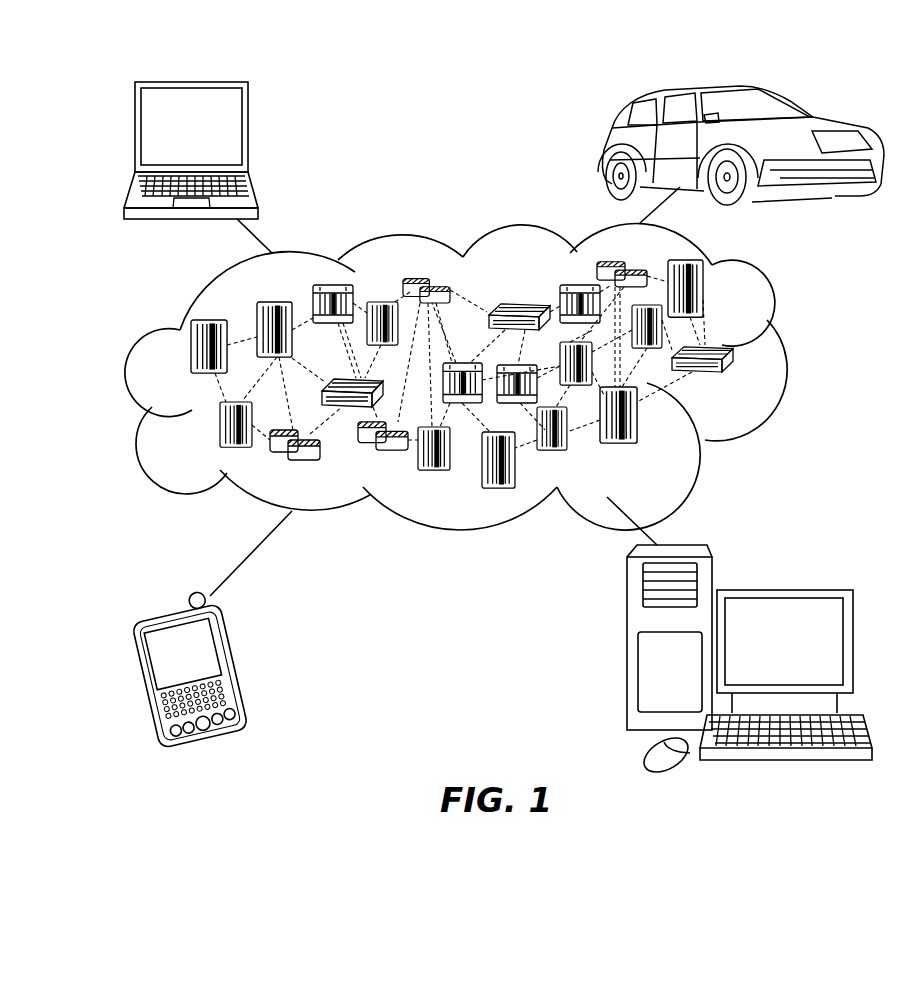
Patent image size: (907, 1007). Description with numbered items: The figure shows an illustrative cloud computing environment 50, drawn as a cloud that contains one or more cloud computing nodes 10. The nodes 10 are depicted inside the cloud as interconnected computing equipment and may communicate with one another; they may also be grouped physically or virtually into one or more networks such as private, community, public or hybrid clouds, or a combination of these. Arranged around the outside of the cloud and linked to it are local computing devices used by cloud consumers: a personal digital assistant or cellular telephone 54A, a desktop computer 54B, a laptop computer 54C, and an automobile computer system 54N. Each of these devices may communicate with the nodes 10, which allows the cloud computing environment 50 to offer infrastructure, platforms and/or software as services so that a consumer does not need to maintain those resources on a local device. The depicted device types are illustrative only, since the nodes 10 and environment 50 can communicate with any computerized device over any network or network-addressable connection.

The cloud computing nodes 10 is at (736, 380).
The cloud computing environment 50 is at (783, 353).
The personal digital assistant or cellular telephone 54A is at (240, 667).
The desktop computer 54B is at (780, 590).
The laptop computer 54C is at (248, 135).
The automobile computer system 54N is at (602, 141).